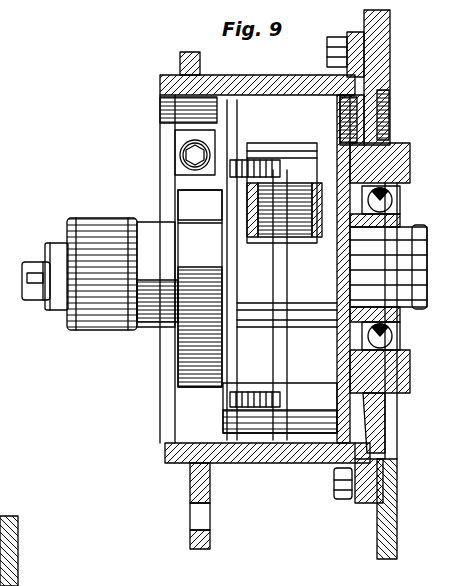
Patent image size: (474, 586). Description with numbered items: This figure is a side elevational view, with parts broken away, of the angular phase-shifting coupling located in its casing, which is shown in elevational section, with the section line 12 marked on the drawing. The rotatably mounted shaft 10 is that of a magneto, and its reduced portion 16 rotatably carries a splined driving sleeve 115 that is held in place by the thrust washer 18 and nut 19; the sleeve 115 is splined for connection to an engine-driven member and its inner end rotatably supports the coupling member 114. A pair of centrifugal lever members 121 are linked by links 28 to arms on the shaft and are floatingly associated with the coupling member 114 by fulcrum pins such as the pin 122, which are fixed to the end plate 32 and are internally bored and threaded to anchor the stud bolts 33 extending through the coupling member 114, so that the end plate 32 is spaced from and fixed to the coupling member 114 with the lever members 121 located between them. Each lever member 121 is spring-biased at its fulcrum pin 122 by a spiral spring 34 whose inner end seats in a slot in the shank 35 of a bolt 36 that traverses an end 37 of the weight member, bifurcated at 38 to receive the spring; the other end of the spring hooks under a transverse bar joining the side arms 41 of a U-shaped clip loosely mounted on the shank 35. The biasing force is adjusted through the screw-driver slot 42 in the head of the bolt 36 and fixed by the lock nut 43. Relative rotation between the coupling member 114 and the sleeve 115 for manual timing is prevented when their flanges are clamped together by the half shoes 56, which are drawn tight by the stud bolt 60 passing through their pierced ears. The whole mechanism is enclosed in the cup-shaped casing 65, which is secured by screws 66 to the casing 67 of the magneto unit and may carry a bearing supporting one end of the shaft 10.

The shaft 10 is at (424, 325).
The section line 12 is at (289, 52).
The reduced portion 16 is at (10, 193).
The thrust washer 18 is at (70, 320).
The nut 19 is at (50, 312).
The link 28 is at (280, 327).
The end plate 32 is at (366, 78).
The stud bolt 33 is at (259, 158).
The spiral spring 34 is at (233, 251).
The shank 35 is at (284, 193).
The bolt 36 is at (338, 235).
The end of centrifugal weight member 37 is at (233, 192).
The bifurcation 38 is at (292, 148).
The side arm 41 is at (232, 233).
The screw-driver slot 42 is at (362, 230).
The lock nut 43 is at (183, 218).
The half shoe 56 is at (183, 195).
The stud bolt 60 is at (182, 150).
The casing 65 is at (306, 452).
The screw 66 is at (344, 496).
The casing of magneto unit 67 is at (17, 576).
The coupling member 114 is at (233, 428).
The sleeve 115 is at (148, 323).
The centrifugal lever member 121 is at (300, 97).
The fulcrum pin 122 is at (389, 100).